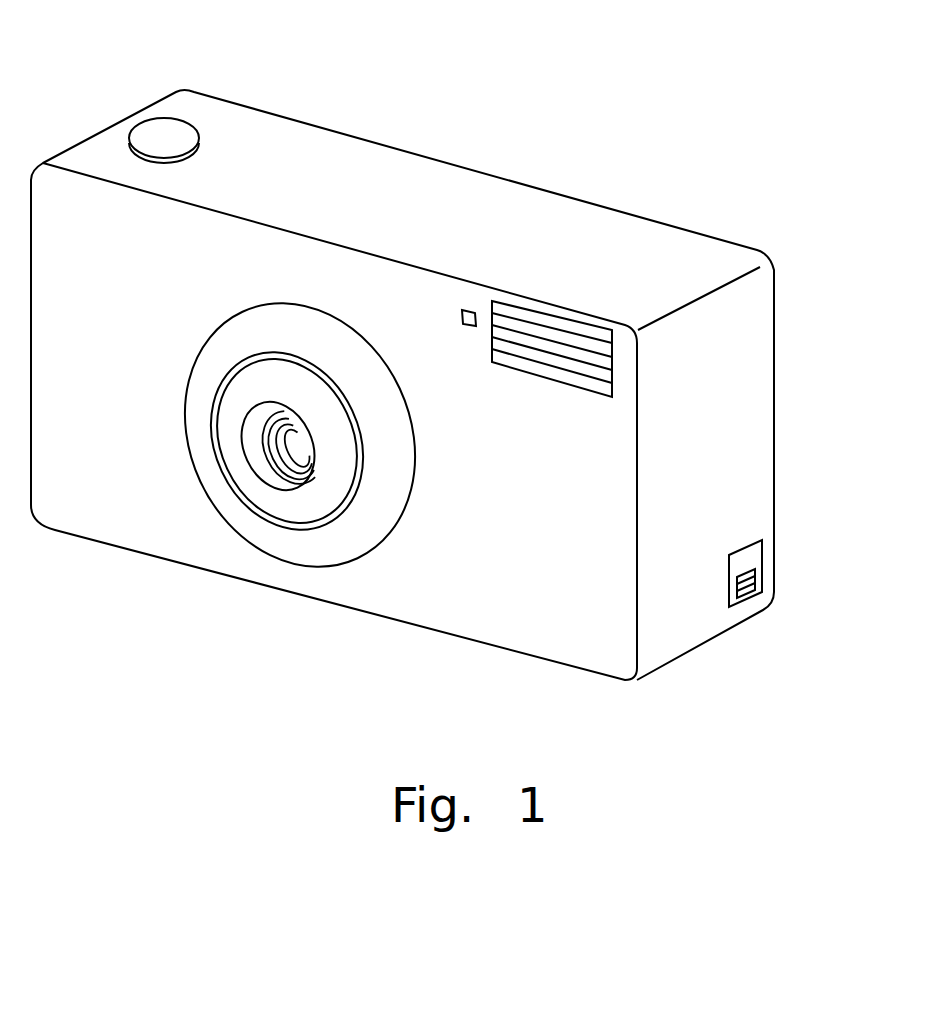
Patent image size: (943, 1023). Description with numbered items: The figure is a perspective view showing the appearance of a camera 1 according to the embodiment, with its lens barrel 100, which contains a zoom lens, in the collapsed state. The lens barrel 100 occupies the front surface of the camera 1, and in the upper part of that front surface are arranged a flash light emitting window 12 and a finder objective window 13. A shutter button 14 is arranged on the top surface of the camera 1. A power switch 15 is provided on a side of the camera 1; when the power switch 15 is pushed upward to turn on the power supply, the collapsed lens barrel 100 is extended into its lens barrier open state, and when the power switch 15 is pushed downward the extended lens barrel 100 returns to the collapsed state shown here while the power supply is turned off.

The camera 1 is at (397, 111).
The lens barrel 100 is at (166, 433).
The flash light emitting window 12 is at (577, 330).
The finder objective window 13 is at (467, 308).
The shutter button 14 is at (167, 133).
The power switch 15 is at (760, 577).